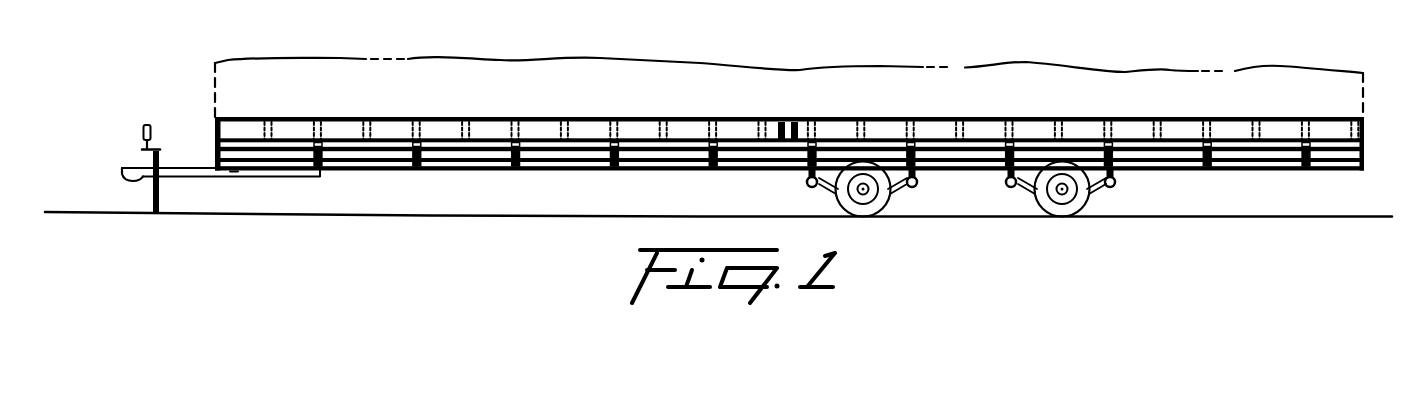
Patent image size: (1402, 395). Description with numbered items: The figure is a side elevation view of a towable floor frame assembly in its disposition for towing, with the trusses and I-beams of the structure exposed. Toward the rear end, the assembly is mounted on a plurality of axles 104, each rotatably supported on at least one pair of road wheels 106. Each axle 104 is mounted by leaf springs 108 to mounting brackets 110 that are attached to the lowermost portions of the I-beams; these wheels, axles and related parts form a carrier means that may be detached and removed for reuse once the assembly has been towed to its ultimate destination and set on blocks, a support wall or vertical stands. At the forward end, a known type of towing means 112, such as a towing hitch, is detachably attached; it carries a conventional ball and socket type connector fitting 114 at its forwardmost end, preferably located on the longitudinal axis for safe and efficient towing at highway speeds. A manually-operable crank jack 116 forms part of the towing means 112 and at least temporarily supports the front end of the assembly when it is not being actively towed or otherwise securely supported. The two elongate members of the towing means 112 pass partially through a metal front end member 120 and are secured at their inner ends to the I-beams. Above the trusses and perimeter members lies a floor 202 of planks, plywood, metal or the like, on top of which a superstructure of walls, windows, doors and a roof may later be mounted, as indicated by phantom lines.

The axle 104 is at (863, 192).
The road wheel 106 is at (843, 202).
The leaf spring 108 is at (897, 190).
The mounting bracket 110 is at (804, 183).
The towing means 112 is at (183, 158).
The connector fitting 114 is at (127, 172).
The crank jack 116 is at (143, 150).
The front end member 120 is at (213, 142).
The floor 202 is at (698, 120).